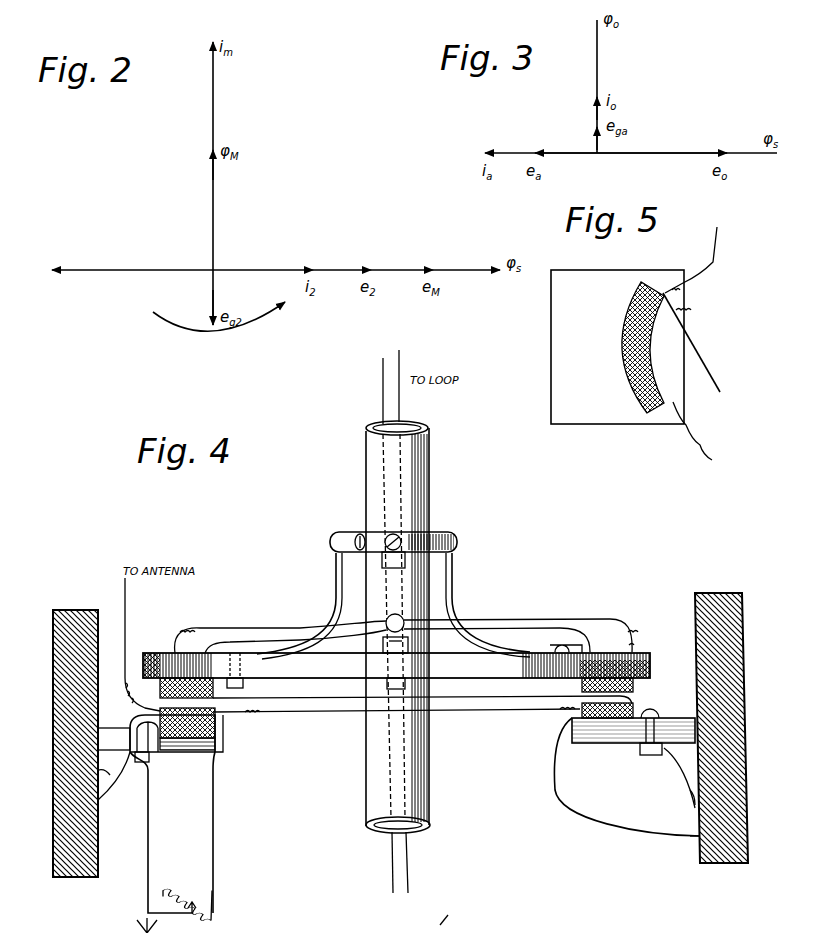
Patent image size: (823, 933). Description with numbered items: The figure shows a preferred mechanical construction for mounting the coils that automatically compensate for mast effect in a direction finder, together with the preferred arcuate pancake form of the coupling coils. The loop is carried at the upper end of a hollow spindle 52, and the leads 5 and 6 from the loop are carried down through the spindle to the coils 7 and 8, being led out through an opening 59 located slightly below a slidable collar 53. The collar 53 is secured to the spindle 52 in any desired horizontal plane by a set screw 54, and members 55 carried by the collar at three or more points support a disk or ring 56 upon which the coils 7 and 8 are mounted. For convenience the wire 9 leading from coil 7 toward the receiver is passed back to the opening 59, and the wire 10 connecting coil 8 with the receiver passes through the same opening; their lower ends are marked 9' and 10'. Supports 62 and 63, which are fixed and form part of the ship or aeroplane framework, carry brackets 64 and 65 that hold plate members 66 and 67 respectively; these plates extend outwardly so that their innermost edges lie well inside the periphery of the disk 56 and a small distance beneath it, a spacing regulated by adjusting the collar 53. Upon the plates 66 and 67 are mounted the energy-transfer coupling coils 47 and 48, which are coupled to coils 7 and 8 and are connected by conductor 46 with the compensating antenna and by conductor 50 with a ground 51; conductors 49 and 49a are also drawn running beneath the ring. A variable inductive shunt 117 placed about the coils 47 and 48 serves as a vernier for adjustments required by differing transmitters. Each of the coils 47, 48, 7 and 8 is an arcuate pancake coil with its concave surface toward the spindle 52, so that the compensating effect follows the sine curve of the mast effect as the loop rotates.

In FIG. 4, the lead 5 is at (381, 380).
In FIG. 4, the lead 6 is at (400, 378).
In FIG. 4, the coil 7 is at (213, 690).
In FIG. 4, the coil 8 is at (634, 687).
In FIG. 4, the wire 9 is at (299, 762).
In FIG. 4, the wire 10 is at (497, 760).
In FIG. 4, the conductor terminal 9' is at (449, 924).
In FIG. 4, the conductor terminal 10' is at (123, 925).
In FIG. 5, the conductor 46 is at (702, 268).
In FIG. 4, the conductor 46 is at (126, 625).
In FIG. 5, the energy-transfer coupling coil 47 is at (655, 412).
In FIG. 4, the energy-transfer coupling coil 47 is at (218, 718).
In FIG. 4, the energy-transfer coupling coil 48 is at (634, 710).
In FIG. 5, the conductor 49 is at (713, 384).
In FIG. 4, the conductor 49 is at (318, 700).
In FIG. 5, the conductor 49a is at (706, 438).
In FIG. 4, the conductor 49a is at (500, 711).
In FIG. 4, the conductor 50 is at (680, 834).
In FIG. 4, the ground 51 is at (699, 838).
In FIG. 4, the hollow spindle 52 is at (428, 497).
In FIG. 4, the slidable collar 53 is at (440, 530).
In FIG. 4, the set screw 54 is at (359, 533).
In FIG. 4, the members 55 is at (336, 585).
In FIG. 4, the disk or ring 56 is at (160, 655).
In FIG. 4, the opening 59 is at (405, 619).
In FIG. 4, the support 62 is at (55, 628).
In FIG. 4, the support 63 is at (745, 700).
In FIG. 4, the bracket 64 is at (120, 776).
In FIG. 4, the bracket 65 is at (672, 752).
In FIG. 5, the plate member 66 is at (562, 424).
In FIG. 4, the plate member 66 is at (215, 755).
In FIG. 4, the plate member 67 is at (590, 745).
In FIG. 4, the variable inductive shunt 117 is at (184, 891).